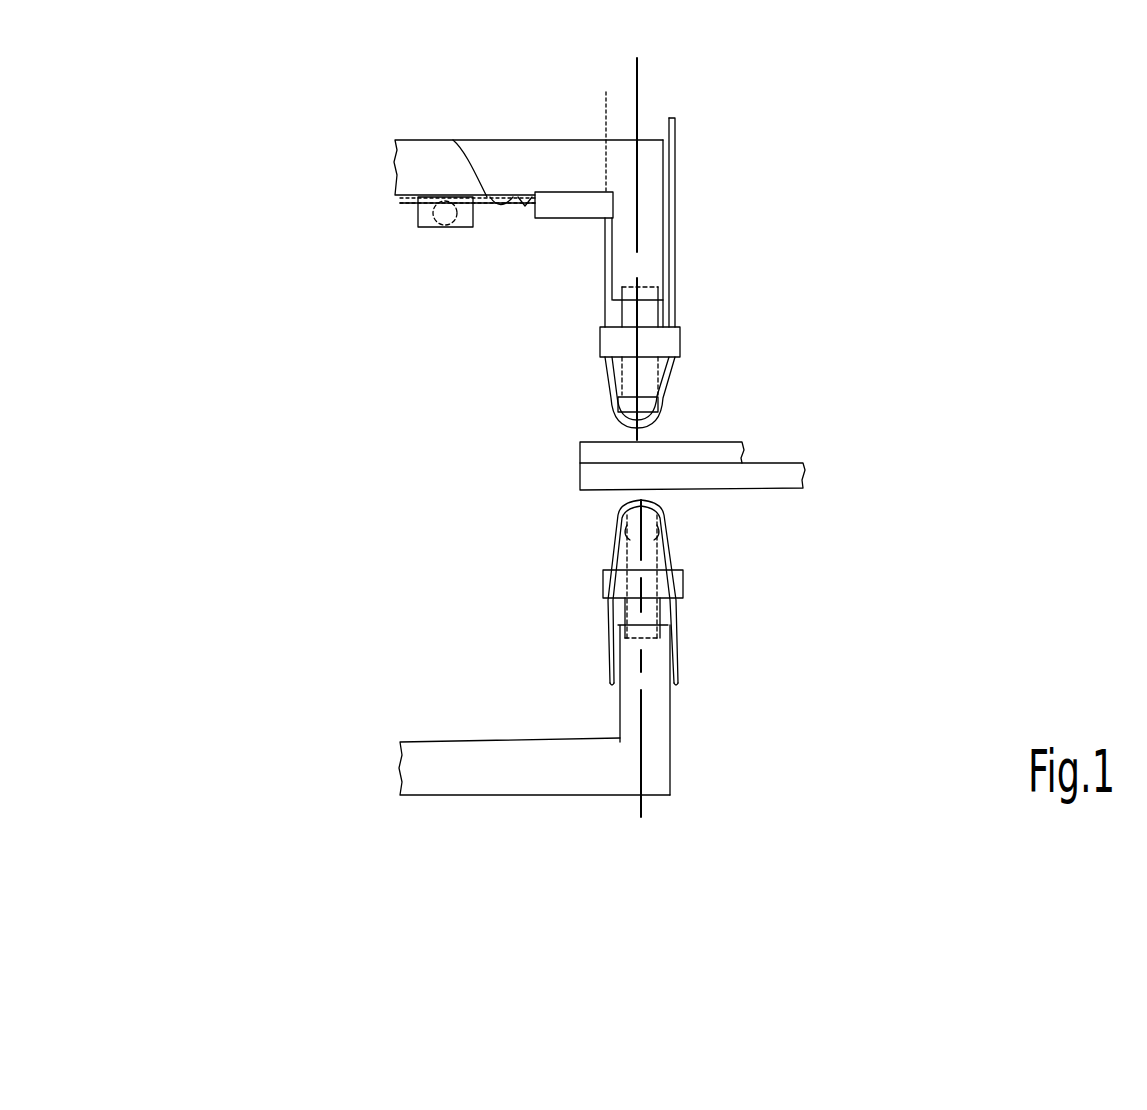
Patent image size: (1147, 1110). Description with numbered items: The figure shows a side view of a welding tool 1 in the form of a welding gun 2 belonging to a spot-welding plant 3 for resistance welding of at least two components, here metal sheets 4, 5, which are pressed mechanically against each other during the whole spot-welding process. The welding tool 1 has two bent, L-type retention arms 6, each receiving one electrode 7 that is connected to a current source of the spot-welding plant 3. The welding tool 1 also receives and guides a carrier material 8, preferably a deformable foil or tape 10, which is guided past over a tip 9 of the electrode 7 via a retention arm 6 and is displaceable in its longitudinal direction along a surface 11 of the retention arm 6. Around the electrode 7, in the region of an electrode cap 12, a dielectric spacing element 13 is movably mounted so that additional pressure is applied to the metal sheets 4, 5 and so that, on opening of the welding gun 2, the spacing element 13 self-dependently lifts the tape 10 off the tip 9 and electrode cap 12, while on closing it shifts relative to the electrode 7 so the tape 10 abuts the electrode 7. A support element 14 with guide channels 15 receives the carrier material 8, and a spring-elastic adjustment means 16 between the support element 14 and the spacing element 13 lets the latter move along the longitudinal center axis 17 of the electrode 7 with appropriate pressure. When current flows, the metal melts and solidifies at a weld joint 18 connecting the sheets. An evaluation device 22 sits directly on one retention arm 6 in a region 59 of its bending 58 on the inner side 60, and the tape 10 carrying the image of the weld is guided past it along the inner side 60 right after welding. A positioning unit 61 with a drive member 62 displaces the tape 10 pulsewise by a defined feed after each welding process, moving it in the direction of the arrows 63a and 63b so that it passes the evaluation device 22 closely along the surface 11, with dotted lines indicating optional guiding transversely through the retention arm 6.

The welding tool 1 is at (832, 138).
The welding gun 2 is at (303, 753).
The spot-welding plant 3 is at (948, 162).
The metal sheet 4 is at (605, 452).
The metal sheet 5 is at (605, 478).
The retention arm 6 is at (507, 162).
The electrode 7 is at (648, 315).
The carrier material 8 is at (683, 232).
The tip 9 is at (673, 420).
The tape 10 is at (606, 92).
The surface 11 is at (670, 212).
The electrode cap 12 is at (672, 403).
The spacing element 13 is at (612, 429).
The support element 14 is at (663, 345).
The guide channel 15 is at (682, 328).
The adjustment means 16 is at (632, 378).
The longitudinal center axis 17 is at (640, 97).
The weld joint 18 is at (614, 413).
The evaluation device 22 is at (600, 196).
The bending 58 is at (547, 227).
The region 59 is at (522, 268).
The inner side 60 is at (452, 139).
The positioning unit 61 is at (405, 232).
The drive member 62 is at (443, 222).
The arrow 63a is at (687, 190).
The arrow 63b is at (590, 248).